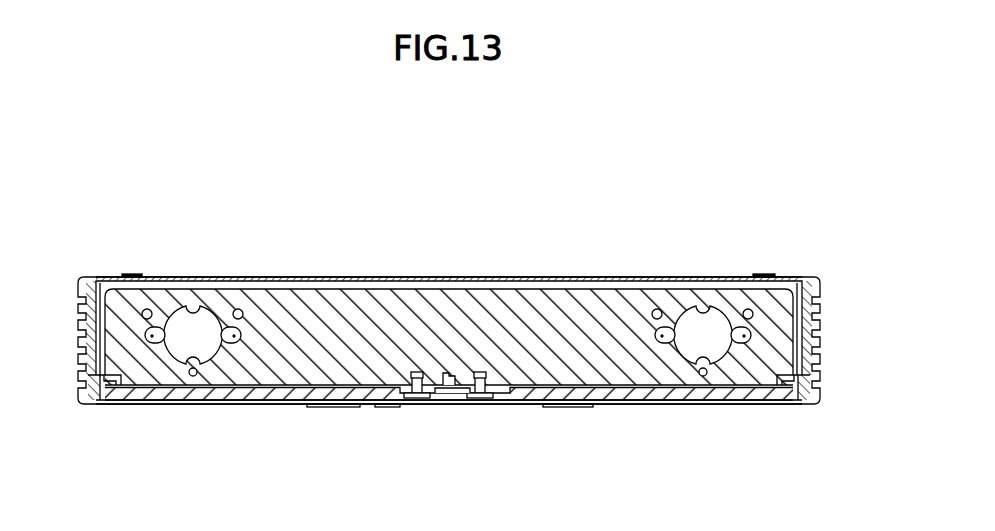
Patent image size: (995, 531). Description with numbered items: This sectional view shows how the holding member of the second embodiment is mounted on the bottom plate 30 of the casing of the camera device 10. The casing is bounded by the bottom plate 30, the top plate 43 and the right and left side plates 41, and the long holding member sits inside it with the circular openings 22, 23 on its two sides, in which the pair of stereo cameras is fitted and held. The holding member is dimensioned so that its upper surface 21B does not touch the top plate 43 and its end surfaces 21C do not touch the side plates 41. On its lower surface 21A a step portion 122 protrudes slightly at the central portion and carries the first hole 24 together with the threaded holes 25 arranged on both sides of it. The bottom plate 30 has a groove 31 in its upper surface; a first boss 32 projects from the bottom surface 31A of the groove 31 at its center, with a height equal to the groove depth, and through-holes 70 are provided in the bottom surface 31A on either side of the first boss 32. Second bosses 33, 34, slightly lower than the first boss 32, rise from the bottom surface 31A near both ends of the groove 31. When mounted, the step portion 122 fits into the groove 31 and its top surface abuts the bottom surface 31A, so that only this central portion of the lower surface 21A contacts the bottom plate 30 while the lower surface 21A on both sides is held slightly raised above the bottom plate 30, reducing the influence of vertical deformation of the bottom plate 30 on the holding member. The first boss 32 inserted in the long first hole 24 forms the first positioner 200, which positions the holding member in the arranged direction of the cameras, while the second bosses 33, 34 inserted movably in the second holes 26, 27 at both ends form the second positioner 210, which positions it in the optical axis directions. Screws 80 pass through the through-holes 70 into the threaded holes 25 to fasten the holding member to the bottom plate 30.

The camera device 10 is at (570, 276).
The side plate 41 is at (73, 283).
The top plate 43 is at (597, 280).
The bottom plate 30 is at (252, 404).
The groove 31 is at (196, 392).
The bottom surface of the groove 31A is at (560, 386).
The lower surface 21A is at (654, 390).
The upper surface 21B is at (272, 285).
The end surface 21C is at (104, 290).
The opening 22 is at (193, 312).
The opening 23 is at (707, 313).
The first hole 24 is at (470, 380).
The threaded hole 25 is at (405, 388).
The second hole 26 is at (160, 393).
The second hole 27 is at (756, 392).
The first boss 32 is at (441, 374).
The second boss 33 is at (114, 395).
The second boss 34 is at (790, 393).
The through-hole 70 is at (428, 398).
The screw 80 is at (414, 398).
The step portion 122 is at (400, 396).
The first positioner 200 is at (400, 209).
The second positioner 210 is at (98, 485).